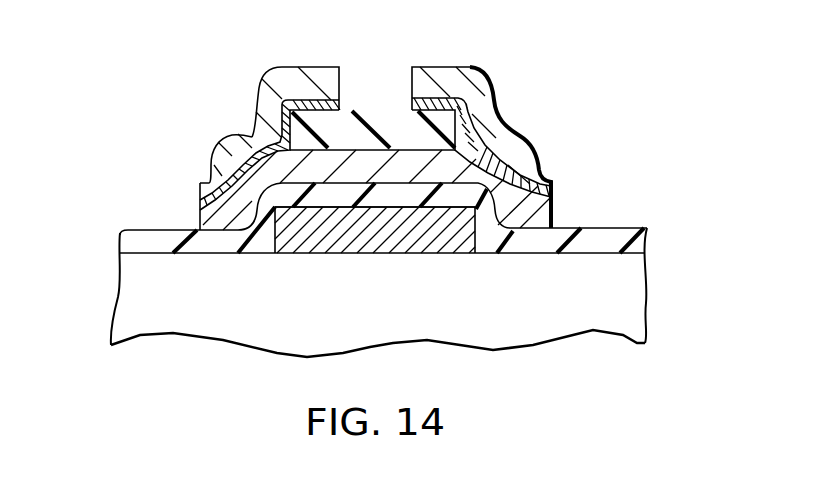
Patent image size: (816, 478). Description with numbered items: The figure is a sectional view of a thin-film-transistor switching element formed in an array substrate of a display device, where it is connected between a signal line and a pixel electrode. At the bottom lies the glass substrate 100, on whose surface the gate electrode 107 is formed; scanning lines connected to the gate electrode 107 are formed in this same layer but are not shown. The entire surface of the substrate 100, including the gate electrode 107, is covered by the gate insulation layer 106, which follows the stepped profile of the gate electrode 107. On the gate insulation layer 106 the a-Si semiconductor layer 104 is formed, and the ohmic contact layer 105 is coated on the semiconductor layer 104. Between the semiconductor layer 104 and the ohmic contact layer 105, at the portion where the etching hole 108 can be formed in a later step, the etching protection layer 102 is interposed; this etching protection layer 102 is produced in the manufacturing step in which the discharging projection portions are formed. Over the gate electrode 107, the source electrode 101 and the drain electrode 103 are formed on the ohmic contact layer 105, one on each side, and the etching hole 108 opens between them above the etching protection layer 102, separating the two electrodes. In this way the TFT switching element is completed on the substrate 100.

The glass substrate 100 is at (367, 327).
The source electrode 101 is at (230, 148).
The etching protection layer 102 is at (380, 128).
The drain electrode 103 is at (480, 80).
The a-Si semiconductor layer 104 is at (482, 172).
The ohmic contact layer 105 is at (505, 163).
The gate insulation layer 106 is at (604, 240).
The gate electrode 107 is at (443, 235).
The etching hole 108 is at (342, 82).